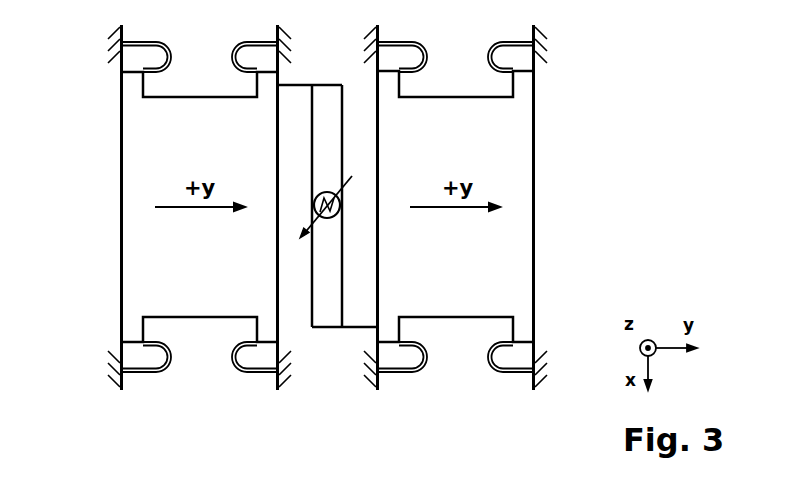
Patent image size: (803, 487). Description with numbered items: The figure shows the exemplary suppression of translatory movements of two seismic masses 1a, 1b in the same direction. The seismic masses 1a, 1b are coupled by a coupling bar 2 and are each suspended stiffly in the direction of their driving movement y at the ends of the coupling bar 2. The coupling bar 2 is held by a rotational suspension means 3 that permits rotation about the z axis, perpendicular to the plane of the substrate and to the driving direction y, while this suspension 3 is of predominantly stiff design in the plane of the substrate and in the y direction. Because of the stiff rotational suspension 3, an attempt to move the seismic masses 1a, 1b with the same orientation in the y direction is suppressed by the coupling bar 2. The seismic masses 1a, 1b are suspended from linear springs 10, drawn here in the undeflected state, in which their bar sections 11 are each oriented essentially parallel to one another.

The seismic mass 1a is at (119, 199).
The seismic mass 1b is at (536, 199).
The coupling bar 2 is at (330, 95).
The rotational suspension means 3 is at (312, 193).
The linear springs 10 is at (230, 378).
The bar sections 11 is at (521, 371).